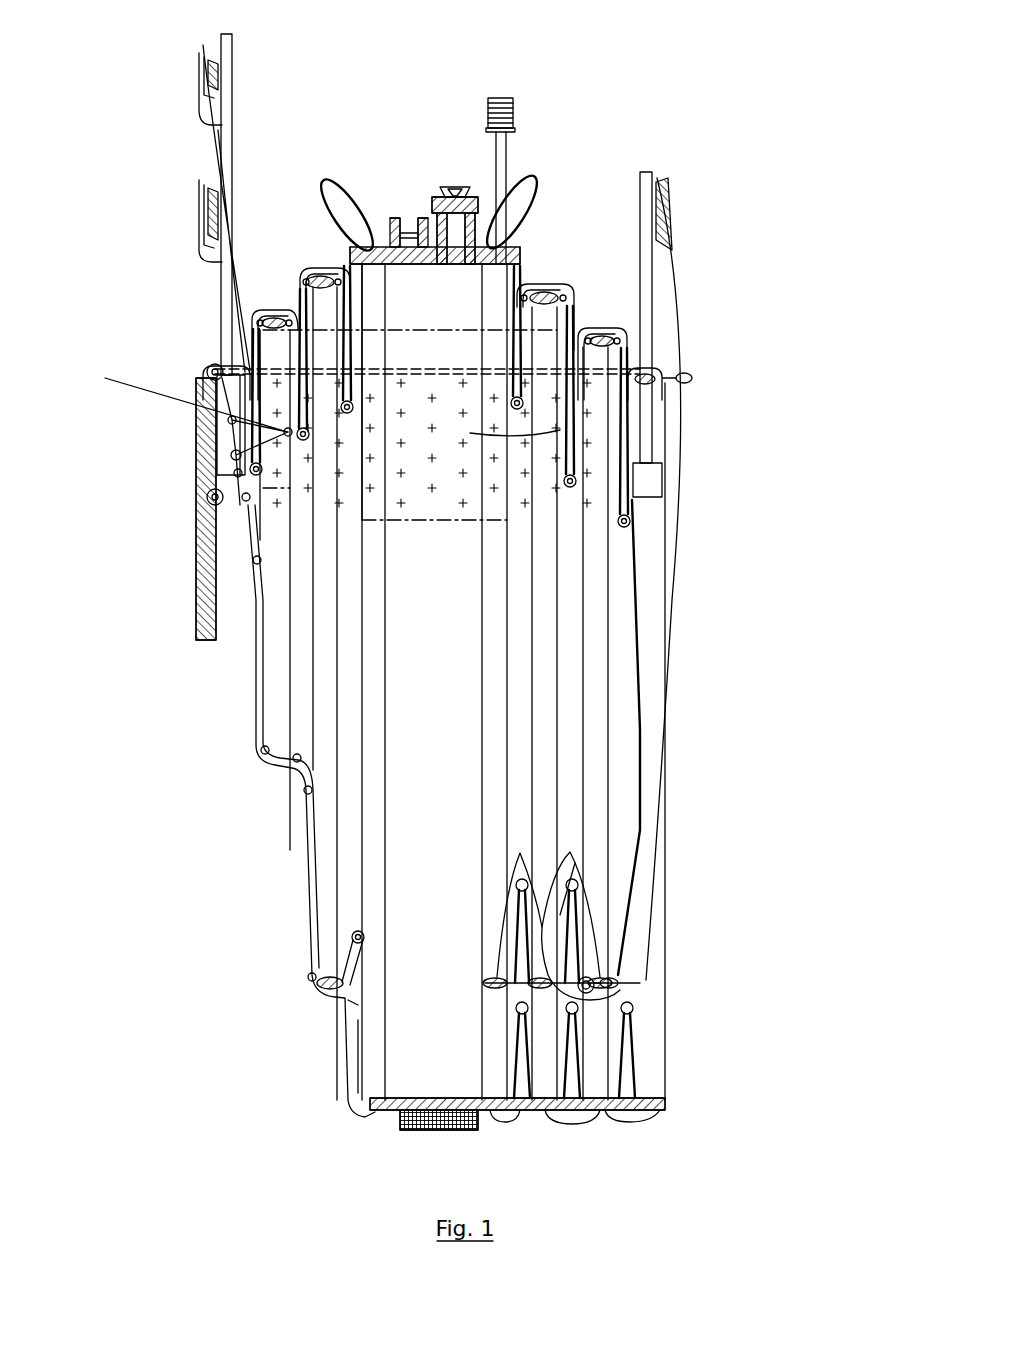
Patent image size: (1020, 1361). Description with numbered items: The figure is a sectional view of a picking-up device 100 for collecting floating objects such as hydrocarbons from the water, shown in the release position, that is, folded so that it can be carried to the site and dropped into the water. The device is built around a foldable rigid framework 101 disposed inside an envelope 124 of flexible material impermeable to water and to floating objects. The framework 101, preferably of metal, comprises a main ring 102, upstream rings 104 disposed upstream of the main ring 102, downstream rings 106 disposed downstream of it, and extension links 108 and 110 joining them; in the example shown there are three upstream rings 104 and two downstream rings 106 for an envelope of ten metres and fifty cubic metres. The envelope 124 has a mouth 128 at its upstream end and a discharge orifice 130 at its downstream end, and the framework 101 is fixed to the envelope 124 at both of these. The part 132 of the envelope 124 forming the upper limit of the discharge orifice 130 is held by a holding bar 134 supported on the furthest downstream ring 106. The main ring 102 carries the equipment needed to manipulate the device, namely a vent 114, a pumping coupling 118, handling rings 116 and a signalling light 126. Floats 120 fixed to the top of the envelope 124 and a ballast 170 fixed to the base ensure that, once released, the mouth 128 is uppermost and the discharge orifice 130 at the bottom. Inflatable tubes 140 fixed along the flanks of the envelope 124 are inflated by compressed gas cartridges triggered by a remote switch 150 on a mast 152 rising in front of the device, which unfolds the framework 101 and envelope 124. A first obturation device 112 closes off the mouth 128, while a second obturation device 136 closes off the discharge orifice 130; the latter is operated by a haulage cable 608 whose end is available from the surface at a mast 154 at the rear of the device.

The picking-up device 100 is at (683, 52).
The foldable rigid framework 101 is at (738, 462).
The main ring 102 is at (410, 1060).
The upstream rings 104 is at (212, 545).
The downstream rings 106 is at (590, 655).
The extension link 108 is at (355, 1018).
The extension link 110 is at (575, 1038).
The first obturation device 112 is at (133, 360).
The vent 114 is at (407, 228).
The handling rings 116 is at (540, 200).
The pumping coupling 118 is at (455, 190).
The floats 120 is at (650, 425).
The envelope 124 is at (648, 722).
The signalling light 126 is at (490, 150).
The mouth 128 is at (195, 430).
The discharge orifice 130 is at (625, 1000).
The part of the envelope 132 is at (600, 960).
The holding bar 134 is at (625, 985).
The second obturation device 136 is at (736, 1052).
The inflatable tube 140 is at (440, 345).
The remote switch 150 is at (200, 98).
The mast 152 is at (226, 80).
The mast 154 is at (645, 172).
The ballast 170 is at (430, 1132).
The haulage cable 608 is at (678, 255).